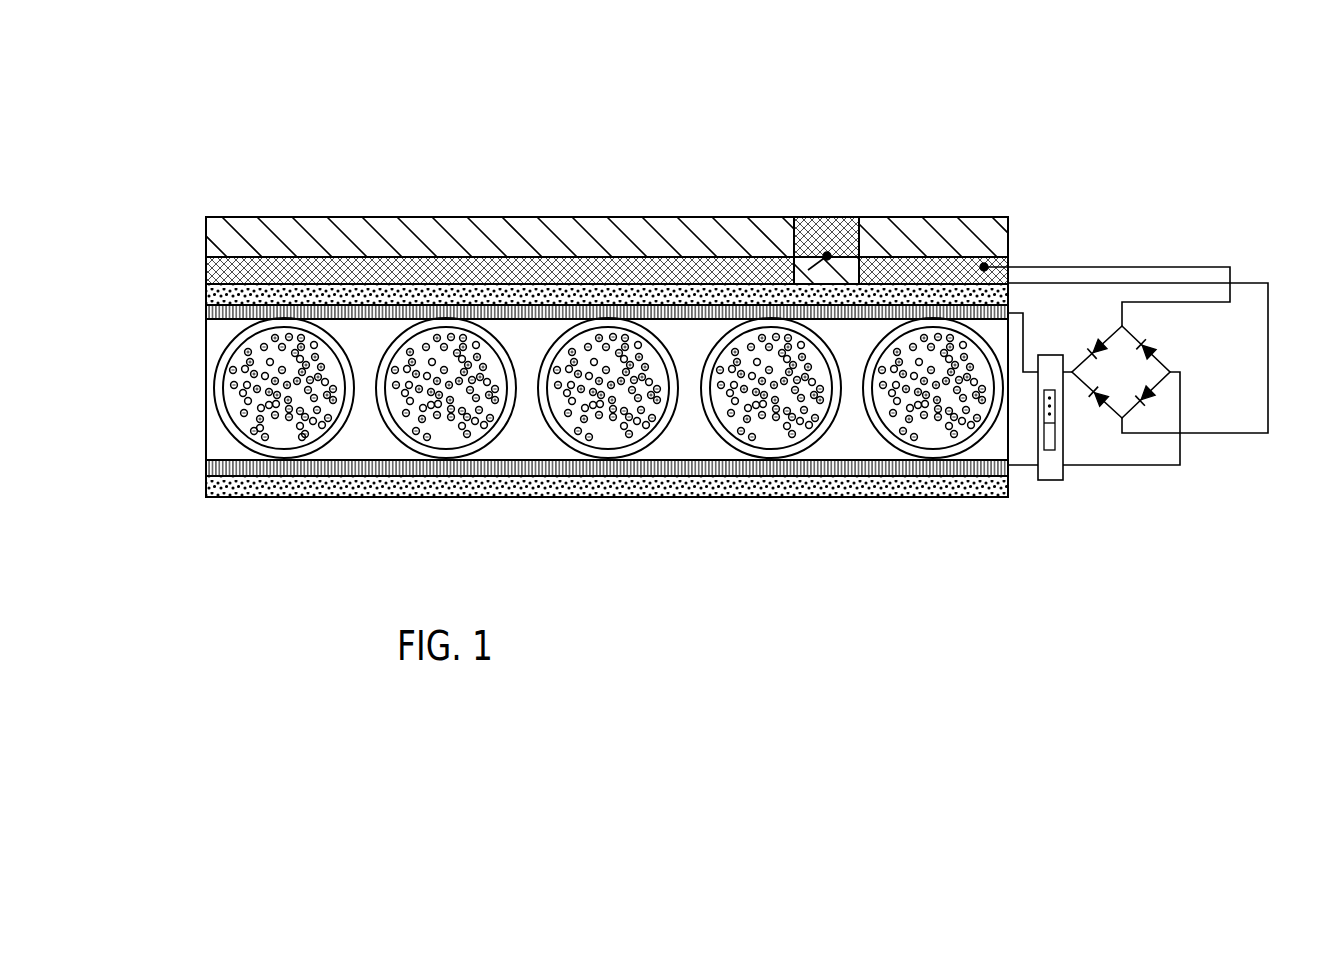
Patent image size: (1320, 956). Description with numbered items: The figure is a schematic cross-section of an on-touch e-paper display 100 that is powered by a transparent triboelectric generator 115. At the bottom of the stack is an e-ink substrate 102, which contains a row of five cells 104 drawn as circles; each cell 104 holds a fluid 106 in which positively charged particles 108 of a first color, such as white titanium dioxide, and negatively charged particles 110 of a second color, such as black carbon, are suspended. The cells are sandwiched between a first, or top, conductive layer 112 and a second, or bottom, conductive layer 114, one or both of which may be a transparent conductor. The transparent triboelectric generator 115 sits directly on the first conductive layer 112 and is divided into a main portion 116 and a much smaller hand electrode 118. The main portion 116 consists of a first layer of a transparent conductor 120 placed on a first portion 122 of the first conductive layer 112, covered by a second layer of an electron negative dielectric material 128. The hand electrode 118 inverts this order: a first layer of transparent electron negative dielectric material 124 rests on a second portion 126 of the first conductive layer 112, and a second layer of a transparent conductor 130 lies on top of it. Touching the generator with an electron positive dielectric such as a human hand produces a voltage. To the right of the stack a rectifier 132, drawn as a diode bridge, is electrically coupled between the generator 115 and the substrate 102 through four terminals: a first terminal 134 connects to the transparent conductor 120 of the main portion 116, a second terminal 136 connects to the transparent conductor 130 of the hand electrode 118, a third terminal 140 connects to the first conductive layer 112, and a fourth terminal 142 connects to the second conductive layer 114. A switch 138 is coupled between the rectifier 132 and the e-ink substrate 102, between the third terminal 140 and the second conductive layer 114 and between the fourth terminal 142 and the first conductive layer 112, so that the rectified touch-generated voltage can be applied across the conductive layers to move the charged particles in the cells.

The on-touch e-paper display 100 is at (322, 180).
The e-ink substrate 102 is at (194, 287).
The cells 104 is at (222, 446).
The fluid 106 is at (252, 437).
The positively charged particles 108 is at (260, 428).
The negatively charged particles 110 is at (302, 437).
The first conductive layer 112 is at (838, 315).
The second conductive layer 114 is at (813, 470).
The transparent triboelectric generator 115 is at (192, 249).
The main portion 116 is at (402, 202).
The hand electrode 118 is at (797, 202).
The first layer of transparent conductor 120 is at (475, 275).
The first portion 122 is at (587, 285).
The first layer of transparent electron negative dielectric material 124 is at (787, 236).
The second portion 126 is at (880, 295).
The second layer of electron negative dielectric material 128 is at (453, 227).
The second layer of transparent conductor 130 is at (821, 240).
The rectifier 132 is at (1202, 378).
The first terminal 134 is at (1125, 315).
The second terminal 136 is at (1128, 413).
The switch 138 is at (1063, 472).
The third terminal 140 is at (1165, 380).
The fourth terminal 142 is at (1072, 372).